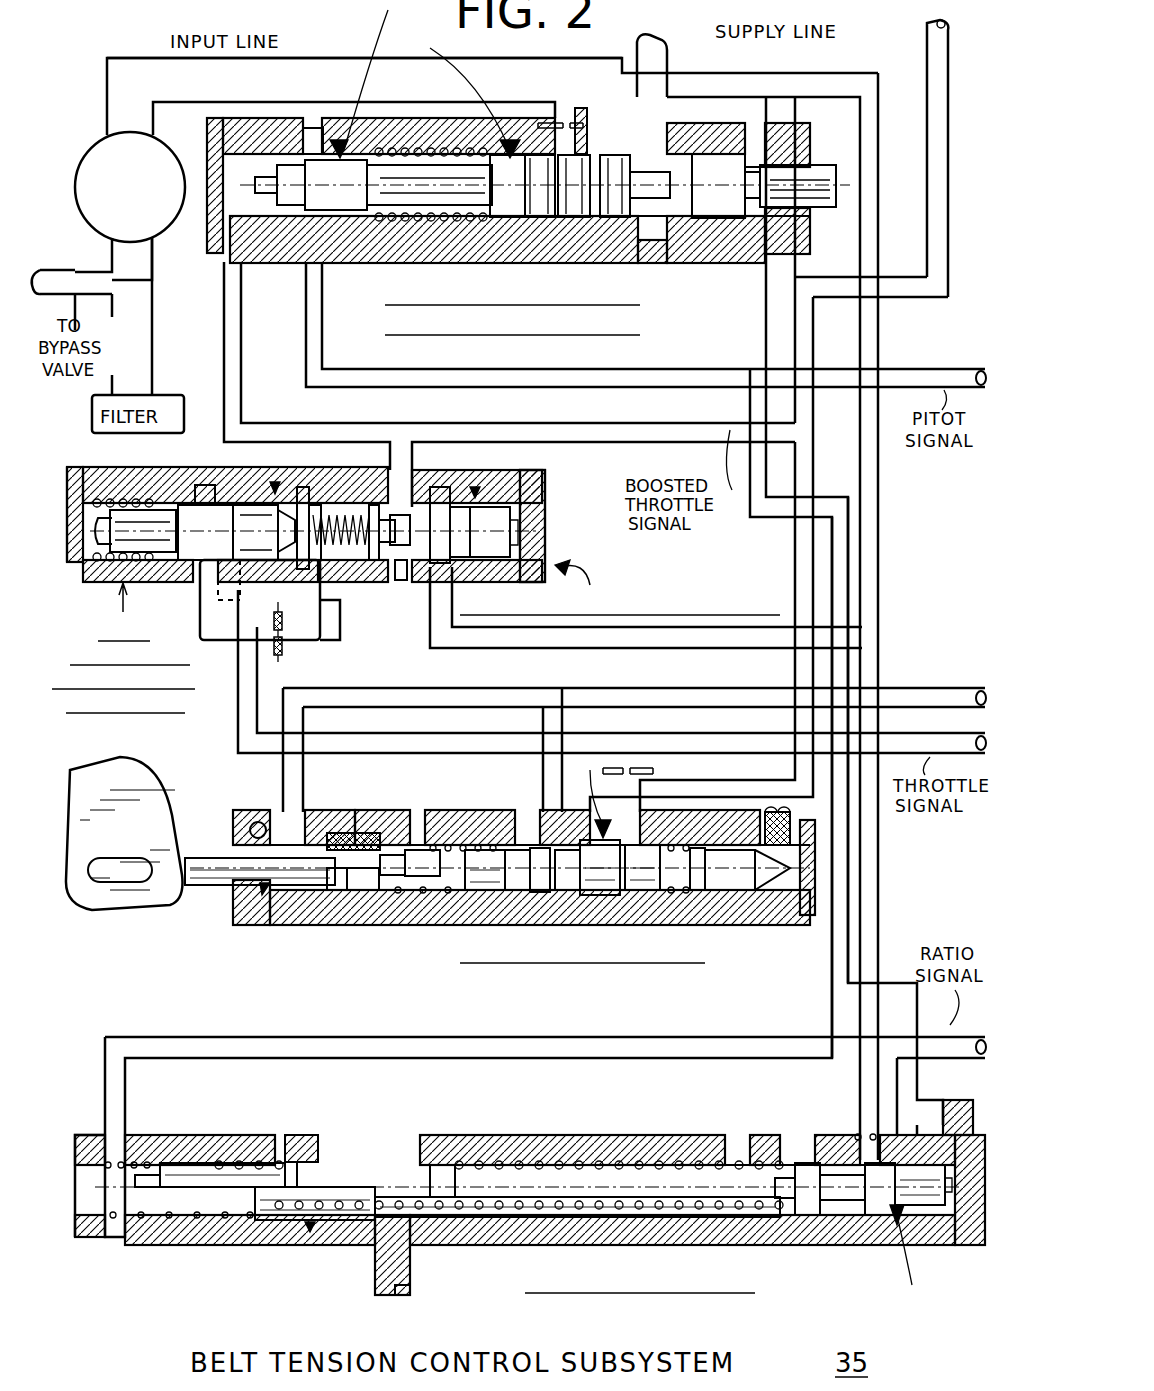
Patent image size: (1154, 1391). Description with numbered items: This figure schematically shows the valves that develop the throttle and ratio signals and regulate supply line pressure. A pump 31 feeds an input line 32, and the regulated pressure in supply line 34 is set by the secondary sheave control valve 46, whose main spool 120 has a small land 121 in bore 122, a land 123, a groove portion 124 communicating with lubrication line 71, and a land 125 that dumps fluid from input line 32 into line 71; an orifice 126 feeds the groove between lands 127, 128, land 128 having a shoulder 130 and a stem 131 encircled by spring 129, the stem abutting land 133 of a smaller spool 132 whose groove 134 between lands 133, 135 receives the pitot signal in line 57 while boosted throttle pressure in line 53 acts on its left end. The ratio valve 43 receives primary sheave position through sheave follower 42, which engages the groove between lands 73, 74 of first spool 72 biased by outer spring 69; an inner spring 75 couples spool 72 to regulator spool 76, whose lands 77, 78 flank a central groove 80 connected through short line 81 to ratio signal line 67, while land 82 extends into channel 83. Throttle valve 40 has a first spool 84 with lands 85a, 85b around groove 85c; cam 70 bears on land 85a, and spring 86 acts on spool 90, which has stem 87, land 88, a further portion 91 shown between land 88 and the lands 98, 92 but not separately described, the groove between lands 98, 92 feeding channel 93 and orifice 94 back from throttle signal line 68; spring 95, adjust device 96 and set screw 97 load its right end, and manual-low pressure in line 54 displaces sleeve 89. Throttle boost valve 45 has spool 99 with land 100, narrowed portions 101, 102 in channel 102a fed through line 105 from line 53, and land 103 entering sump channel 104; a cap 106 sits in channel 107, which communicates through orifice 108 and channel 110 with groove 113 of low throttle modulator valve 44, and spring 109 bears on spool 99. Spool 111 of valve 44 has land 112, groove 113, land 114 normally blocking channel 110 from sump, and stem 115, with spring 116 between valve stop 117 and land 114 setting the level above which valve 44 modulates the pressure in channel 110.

The pump 31 is at (85, 152).
The input line 32 is at (362, 65).
The supply line 34 is at (787, 82).
The throttle valve 40 is at (408, 810).
The sheave follower 42 is at (303, 1135).
The ratio valve 43 is at (420, 1118).
The low throttle modulator valve 44 is at (155, 470).
The throttle boost valve 45 is at (515, 470).
The secondary sheave control valve 46 is at (392, 152).
The boosted throttle signal line 53 is at (635, 432).
The manual low line 54 is at (295, 768).
The pitot signal line 57 is at (912, 372).
The ratio signal line 67 is at (840, 567).
The throttle signal line 68 is at (932, 745).
The outer spring 69 is at (148, 1218).
The cam 70 is at (145, 780).
The lubrication line 71 is at (668, 58).
The first spool 72 is at (310, 1230).
The land 73 is at (210, 1172).
The land 74 is at (455, 1215).
The inner spring 75 is at (595, 1163).
The regulator valve spool 76 is at (925, 1314).
The land 77 is at (805, 1217).
The land 78 is at (878, 1217).
The central groove 80 is at (830, 1150).
The short line 81 is at (835, 1100).
The land 82 is at (918, 1210).
The short channel 83 is at (965, 1130).
The first spool 84 is at (265, 885).
The land 85a is at (200, 885).
The land 85b is at (365, 892).
The groove 85c is at (335, 892).
The spring 86 is at (432, 895).
The stem 87 is at (480, 852).
The land 88 is at (515, 852).
The movable sleeve 89 is at (360, 835).
The spool 90 is at (597, 777).
The land 91 is at (548, 845).
The land 92 is at (645, 892).
The short channel 93 is at (630, 810).
The orifice 94 is at (628, 770).
The spring 95 is at (690, 890).
The adjust device 96 is at (740, 893).
The set screw 97 is at (775, 812).
The land 98 is at (600, 892).
The spool 99 is at (498, 467).
The land 100 is at (345, 512).
The narrower cylindrical portion 101 is at (378, 560).
The narrower cylindrical portion 102 is at (410, 560).
The channel 102a is at (400, 582).
The land 103 is at (520, 525).
The channel 104 is at (528, 560).
The line 105 is at (413, 458).
The cap 106 is at (300, 490).
The channel 107 is at (308, 625).
The orifice 108 is at (284, 648).
The spring 109 is at (320, 560).
The channel 110 is at (200, 625).
The spool 111 is at (285, 467).
The land 112 is at (262, 555).
The groove 113 is at (210, 490).
The land 114 is at (165, 515).
The stem portion 115 is at (110, 545).
The spring 116 is at (130, 560).
The valve stop 117 is at (72, 480).
The main spool 120 is at (440, 44).
The small diameter land 121 is at (826, 208).
The bore 122 is at (798, 170).
The land 123 is at (715, 165).
The groove portion 124 is at (655, 228).
The land 125 is at (615, 215).
The orifice 126 is at (565, 120).
The land 127 is at (575, 215).
The land 128 is at (540, 210).
The spring 129 is at (383, 215).
The shoulder portion 130 is at (498, 205).
The stem 131 is at (410, 205).
The smaller spool 132 is at (390, 16).
The land 133 is at (345, 205).
The groove 134 is at (282, 152).
The land 135 is at (275, 195).